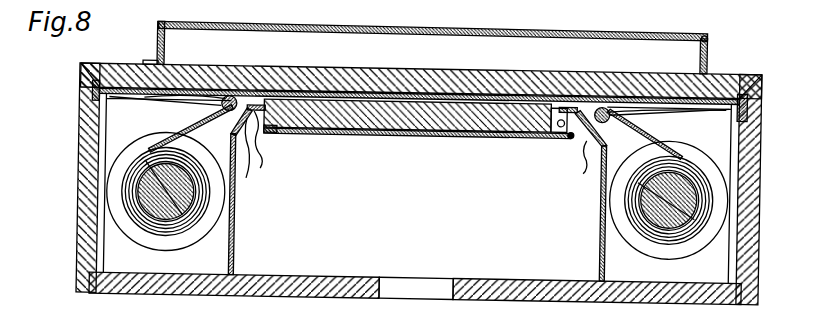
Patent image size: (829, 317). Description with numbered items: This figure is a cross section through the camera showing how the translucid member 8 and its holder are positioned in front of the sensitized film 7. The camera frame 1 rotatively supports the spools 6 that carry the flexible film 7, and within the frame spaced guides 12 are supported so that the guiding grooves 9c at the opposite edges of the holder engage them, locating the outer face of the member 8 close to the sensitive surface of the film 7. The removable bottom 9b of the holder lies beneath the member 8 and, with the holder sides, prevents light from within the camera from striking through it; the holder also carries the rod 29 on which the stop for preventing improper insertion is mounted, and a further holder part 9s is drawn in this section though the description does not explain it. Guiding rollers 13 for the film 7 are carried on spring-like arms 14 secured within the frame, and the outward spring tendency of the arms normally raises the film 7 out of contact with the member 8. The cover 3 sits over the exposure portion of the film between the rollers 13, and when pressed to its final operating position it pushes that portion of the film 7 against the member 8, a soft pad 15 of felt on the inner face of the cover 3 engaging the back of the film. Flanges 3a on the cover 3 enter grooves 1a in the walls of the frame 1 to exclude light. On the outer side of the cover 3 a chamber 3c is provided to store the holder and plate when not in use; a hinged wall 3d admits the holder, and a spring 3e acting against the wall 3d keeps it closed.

The frame 1 is at (80, 249).
The grooves 1a is at (82, 100).
The cover 3 is at (762, 69).
The flanges 3a is at (93, 98).
The chamber 3c is at (279, 20).
The hinged wall 3d is at (693, 55).
The spring 3e is at (709, 37).
The spools 6 is at (157, 209).
The flexible film 7 is at (190, 225).
The translucid member 8 is at (432, 119).
The bottom of holder 9b is at (342, 133).
The guiding grooves 9c is at (278, 129).
The spring 9s is at (288, 132).
The guides 12 is at (260, 167).
The guiding rollers 13 is at (231, 108).
The spring-like arms 14 is at (173, 100).
The pad 15 is at (320, 88).
The rod 29 is at (548, 126).